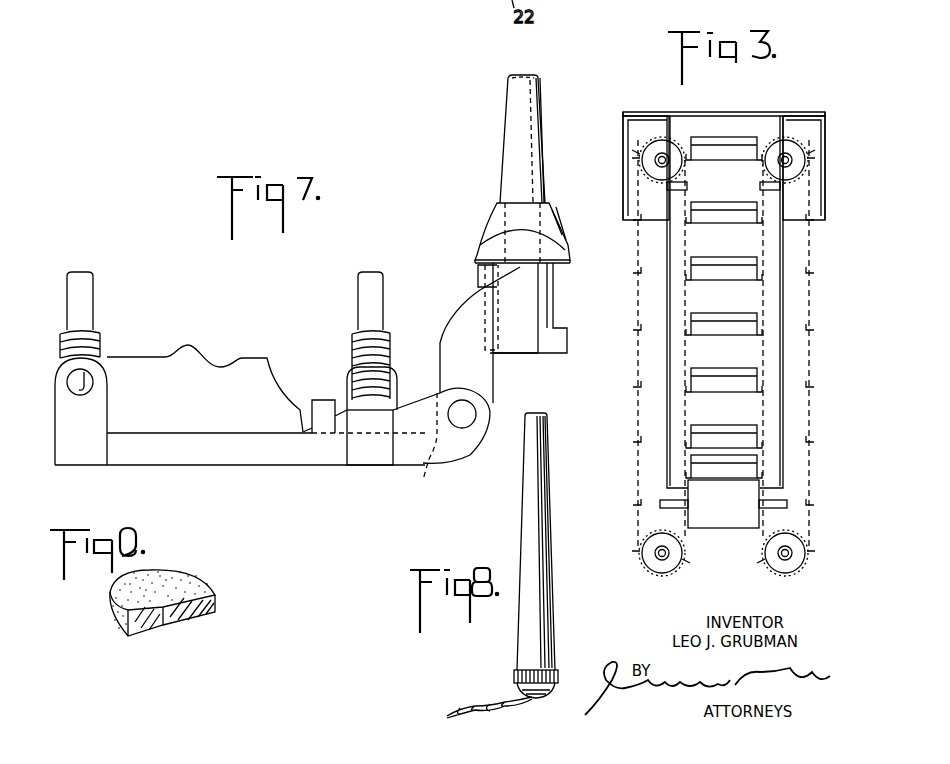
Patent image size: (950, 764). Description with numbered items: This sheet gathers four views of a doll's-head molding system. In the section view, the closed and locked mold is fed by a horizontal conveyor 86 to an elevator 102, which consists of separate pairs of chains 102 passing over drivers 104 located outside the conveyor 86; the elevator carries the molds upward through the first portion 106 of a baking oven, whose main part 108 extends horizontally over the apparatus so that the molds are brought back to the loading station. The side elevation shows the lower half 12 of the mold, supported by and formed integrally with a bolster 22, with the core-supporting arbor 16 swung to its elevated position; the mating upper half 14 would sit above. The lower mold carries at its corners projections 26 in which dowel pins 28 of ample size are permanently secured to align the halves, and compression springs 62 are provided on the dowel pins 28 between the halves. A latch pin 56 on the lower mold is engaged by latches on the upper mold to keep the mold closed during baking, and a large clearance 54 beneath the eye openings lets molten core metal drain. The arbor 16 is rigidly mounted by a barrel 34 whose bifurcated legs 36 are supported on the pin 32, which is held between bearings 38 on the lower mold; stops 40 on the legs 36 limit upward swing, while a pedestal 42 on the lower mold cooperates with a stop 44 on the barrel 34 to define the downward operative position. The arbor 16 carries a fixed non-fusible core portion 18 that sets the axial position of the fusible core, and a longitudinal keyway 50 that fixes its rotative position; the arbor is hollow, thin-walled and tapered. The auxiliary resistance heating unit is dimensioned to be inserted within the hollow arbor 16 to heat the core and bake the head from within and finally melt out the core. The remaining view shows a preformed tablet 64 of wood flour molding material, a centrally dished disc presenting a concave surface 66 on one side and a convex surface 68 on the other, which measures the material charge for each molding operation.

In FIG. 3, the lower half of the mold 12 is at (715, 387).
In FIG. 7, the lower half of the mold 12 is at (150, 420).
In FIG. 3, the upper half of the mold 14 is at (729, 320).
In FIG. 7, the core-supporting arbor 16 is at (525, 108).
In FIG. 7, the non-fusible core portion 18 is at (550, 228).
In FIG. 7, the bolster 22 is at (212, 450).
In FIG. 7, the projections 26 is at (366, 450).
In FIG. 7, the dowel pins 28 is at (363, 307).
In FIG. 7, the pin 32 is at (465, 430).
In FIG. 7, the barrel 34 is at (548, 302).
In FIG. 7, the legs 36 is at (487, 377).
In FIG. 7, the bearings 38 is at (440, 440).
In FIG. 7, the stops 40 is at (428, 464).
In FIG. 7, the pedestal 42 is at (323, 420).
In FIG. 7, the stop 44 is at (478, 278).
In FIG. 7, the longitudinal keyway 50 is at (540, 147).
In FIG. 7, the clearance 54 is at (400, 0).
In FIG. 7, the latch pins 56 is at (78, 392).
In FIG. 7, the compression springs 62 is at (385, 370).
In FIG. 9, the tablet 64 is at (215, 608).
In FIG. 9, the concave surface 66 is at (157, 578).
In FIG. 9, the convex surface 68 is at (170, 630).
In FIG. 3, the conveyor 86 is at (718, 512).
In FIG. 3, the elevator 102 is at (760, 540).
In FIG. 3, the drivers 104 is at (798, 142).
In FIG. 3, the first portion of baking oven 106 is at (773, 377).
In FIG. 3, the main part of baking oven 108 is at (718, 113).